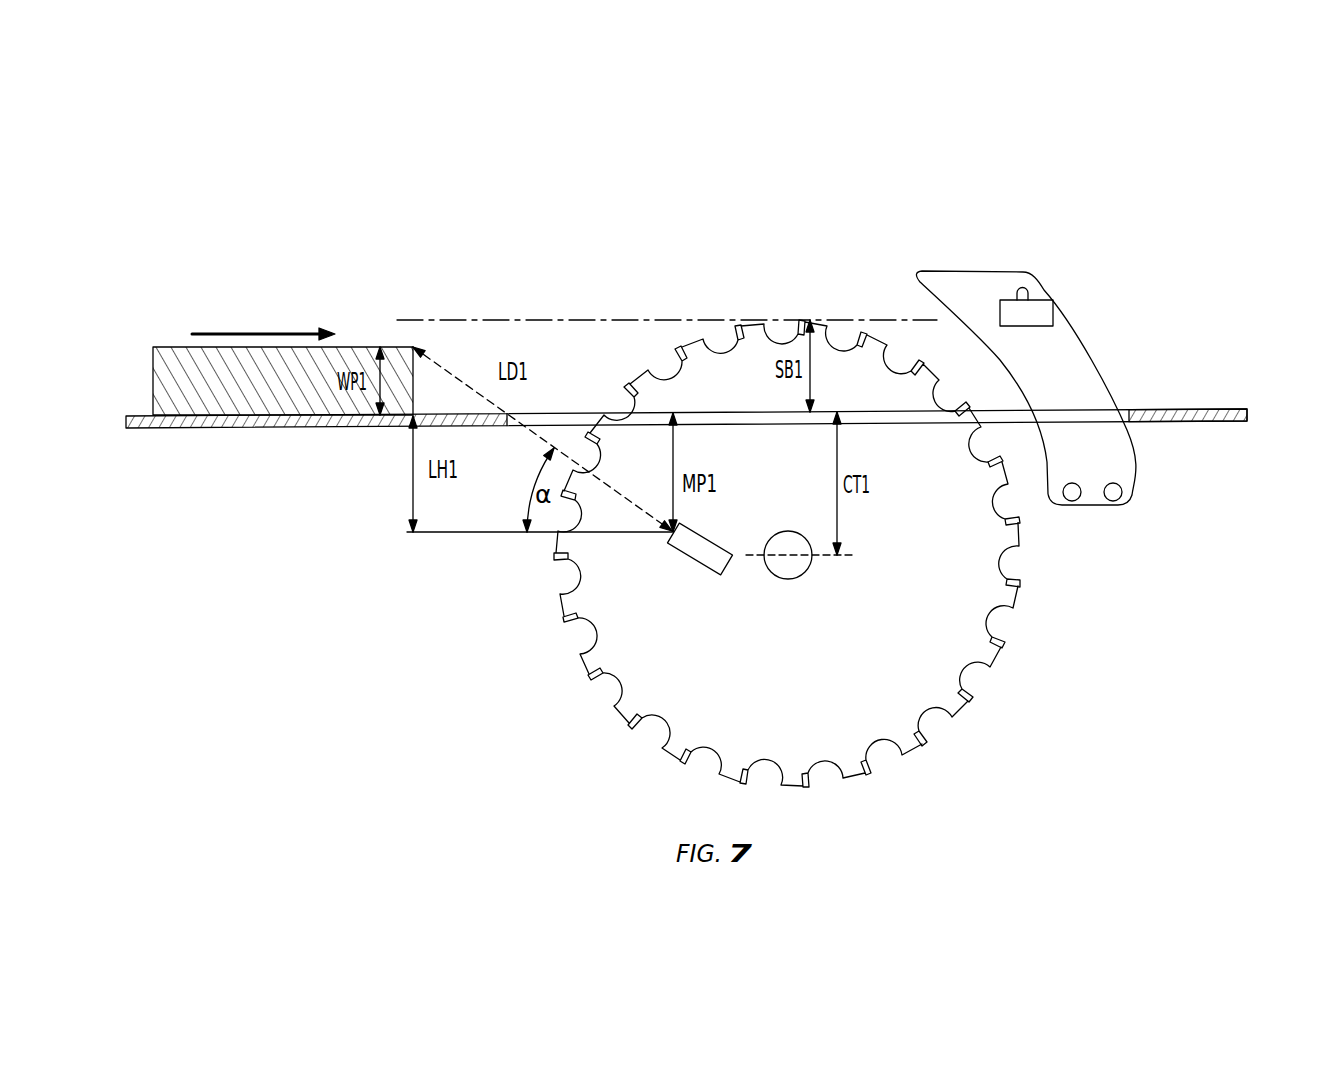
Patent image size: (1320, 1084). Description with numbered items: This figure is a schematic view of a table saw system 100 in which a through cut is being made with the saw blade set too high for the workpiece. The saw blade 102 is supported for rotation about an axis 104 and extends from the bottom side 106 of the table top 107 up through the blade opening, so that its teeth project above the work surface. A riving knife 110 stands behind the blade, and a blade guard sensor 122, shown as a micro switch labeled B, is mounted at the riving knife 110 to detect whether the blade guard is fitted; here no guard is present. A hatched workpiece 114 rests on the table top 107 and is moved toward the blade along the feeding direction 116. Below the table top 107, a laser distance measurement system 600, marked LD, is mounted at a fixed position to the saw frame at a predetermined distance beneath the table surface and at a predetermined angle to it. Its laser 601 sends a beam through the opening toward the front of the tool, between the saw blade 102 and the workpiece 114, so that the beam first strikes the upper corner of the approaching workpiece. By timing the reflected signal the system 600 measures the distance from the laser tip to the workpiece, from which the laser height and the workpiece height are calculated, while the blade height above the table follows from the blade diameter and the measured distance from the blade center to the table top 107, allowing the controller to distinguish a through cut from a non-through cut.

The saw system 100 is at (1143, 209).
The saw blade 102 is at (618, 712).
The axis 104 is at (792, 568).
The bottom side 106 is at (172, 437).
The table top 107 is at (1205, 408).
The riving knife 110 is at (1105, 463).
The workpiece 114 is at (153, 348).
The feeding direction 116 is at (285, 332).
The blade guard sensor 122 is at (1045, 308).
The laser distance measurement system 600 is at (728, 573).
The laser 601 is at (707, 553).